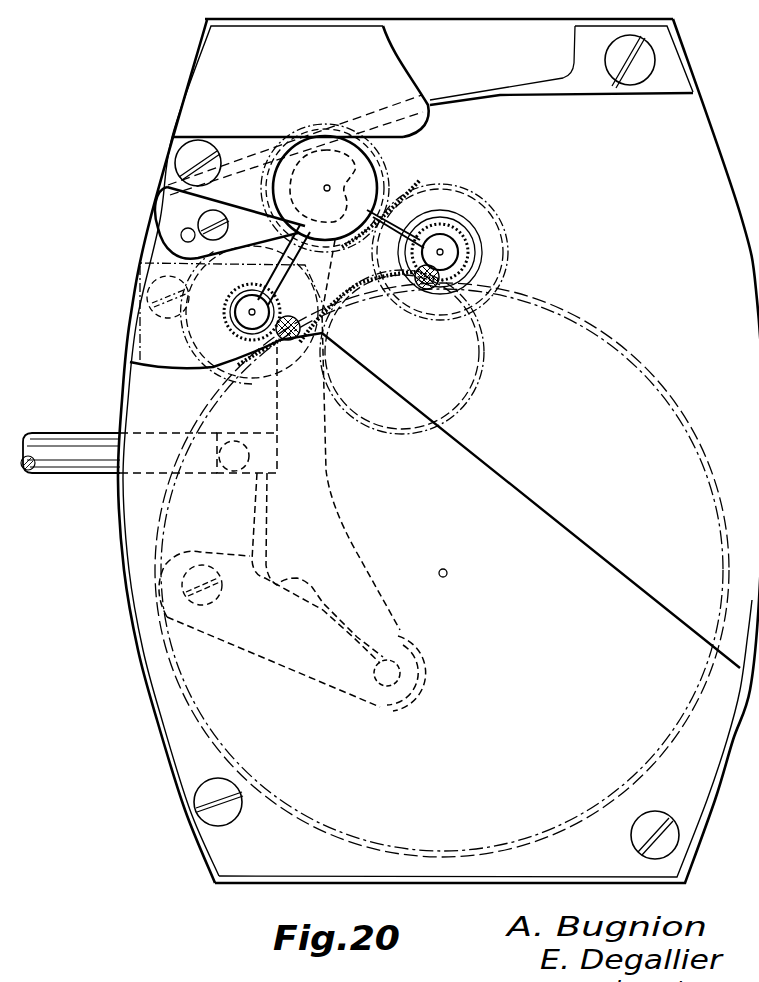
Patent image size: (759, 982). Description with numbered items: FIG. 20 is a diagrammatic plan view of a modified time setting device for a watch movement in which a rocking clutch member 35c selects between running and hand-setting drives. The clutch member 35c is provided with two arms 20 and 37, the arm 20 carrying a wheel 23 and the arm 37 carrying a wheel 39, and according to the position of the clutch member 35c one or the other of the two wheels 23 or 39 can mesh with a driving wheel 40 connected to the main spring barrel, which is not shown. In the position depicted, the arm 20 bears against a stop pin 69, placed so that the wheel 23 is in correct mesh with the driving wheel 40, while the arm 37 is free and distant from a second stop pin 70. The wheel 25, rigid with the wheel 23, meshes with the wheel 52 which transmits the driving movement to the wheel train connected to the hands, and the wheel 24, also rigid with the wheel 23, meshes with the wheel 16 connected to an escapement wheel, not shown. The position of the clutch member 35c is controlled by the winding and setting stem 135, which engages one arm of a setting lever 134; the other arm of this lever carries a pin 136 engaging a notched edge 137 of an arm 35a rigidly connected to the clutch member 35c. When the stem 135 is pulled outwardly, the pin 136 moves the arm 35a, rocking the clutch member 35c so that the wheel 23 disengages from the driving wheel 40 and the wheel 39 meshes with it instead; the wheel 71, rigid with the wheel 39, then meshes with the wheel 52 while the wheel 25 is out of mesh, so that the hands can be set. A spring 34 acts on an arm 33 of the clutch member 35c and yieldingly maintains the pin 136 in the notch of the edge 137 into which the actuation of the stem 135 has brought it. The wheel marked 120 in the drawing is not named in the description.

The wheel 16 is at (400, 185).
The arm 20 is at (402, 218).
The wheel 23 is at (468, 236).
The wheel 24 is at (491, 208).
The wheel 25 is at (444, 226).
The arm 33 is at (168, 200).
The spring 34 is at (500, 88).
The arm 35a is at (375, 172).
The clutch member 35c is at (177, 248).
The arm 37 is at (277, 268).
The wheel 39 is at (238, 334).
The driving wheel 40 is at (582, 318).
The wheel 52 is at (481, 357).
The stop pin 69 is at (436, 290).
The stop pin 70 is at (291, 345).
The wheel 71 is at (197, 345).
The barrel wheel 120 is at (325, 188).
The setting lever 134 is at (397, 643).
The winding and setting stem 135 is at (77, 460).
The pin 136 is at (383, 686).
The notched edge 137 is at (375, 652).